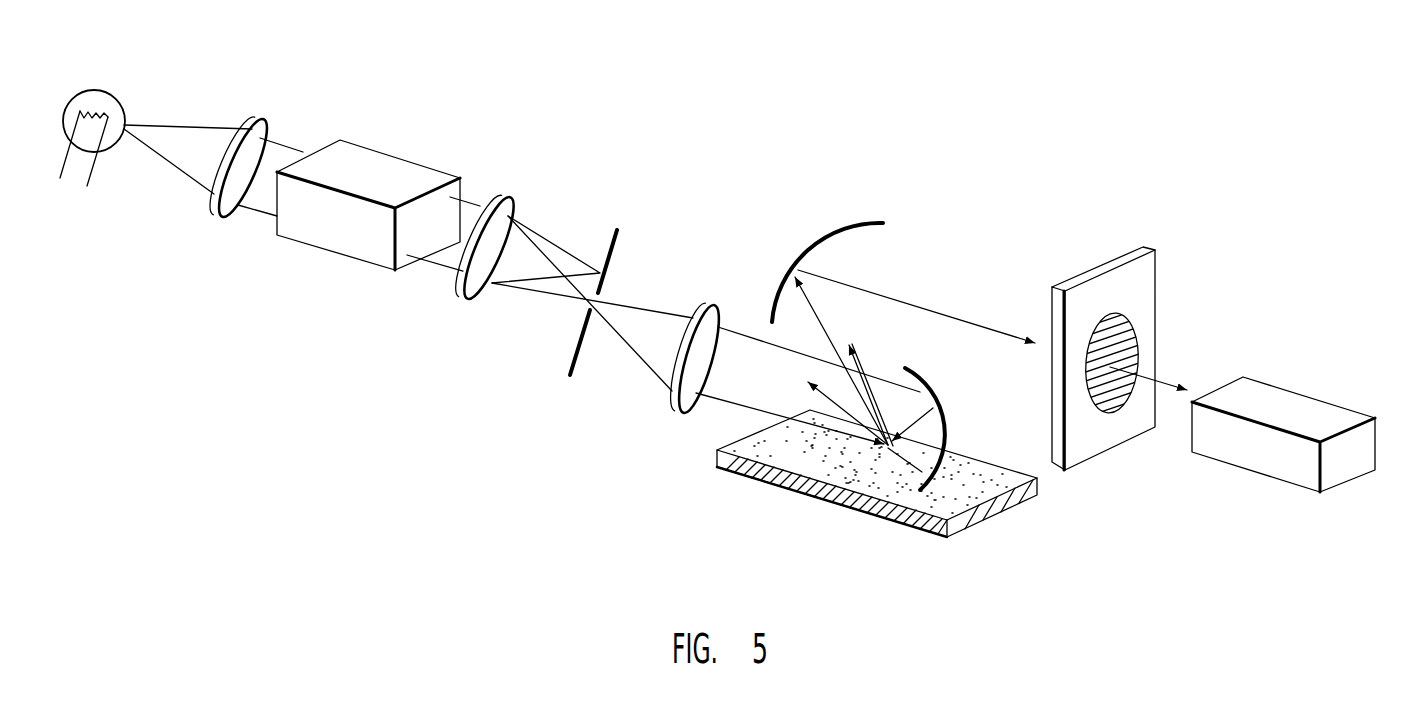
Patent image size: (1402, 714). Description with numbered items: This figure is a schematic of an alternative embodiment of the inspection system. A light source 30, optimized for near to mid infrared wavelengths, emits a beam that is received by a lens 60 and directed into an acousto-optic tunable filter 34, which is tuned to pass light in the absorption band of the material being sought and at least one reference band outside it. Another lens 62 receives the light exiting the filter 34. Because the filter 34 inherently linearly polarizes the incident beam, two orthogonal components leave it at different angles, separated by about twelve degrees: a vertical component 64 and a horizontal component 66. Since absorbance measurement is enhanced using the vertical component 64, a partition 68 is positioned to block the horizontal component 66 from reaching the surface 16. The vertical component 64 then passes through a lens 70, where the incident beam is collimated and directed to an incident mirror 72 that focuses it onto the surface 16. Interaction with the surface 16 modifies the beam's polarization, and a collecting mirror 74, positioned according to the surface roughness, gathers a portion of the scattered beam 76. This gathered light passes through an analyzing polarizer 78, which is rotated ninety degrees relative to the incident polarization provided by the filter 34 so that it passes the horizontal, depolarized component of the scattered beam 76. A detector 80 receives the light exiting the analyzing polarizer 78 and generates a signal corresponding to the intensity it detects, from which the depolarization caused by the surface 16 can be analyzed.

The light source 30 is at (117, 101).
The lens 60 is at (233, 221).
The acousto-optic tunable filter 34 is at (390, 178).
The lens 62 is at (478, 302).
The horizontal component 66 is at (550, 240).
The vertical component 64 is at (549, 297).
The partition 68 is at (589, 349).
The lens 70 is at (726, 313).
The collecting mirror 74 is at (843, 235).
The scattered beam 76 is at (913, 305).
The incident mirror 72 is at (902, 369).
The surface 16 is at (985, 517).
The analyzing polarizer 78 is at (1147, 300).
The detector 80 is at (1347, 457).